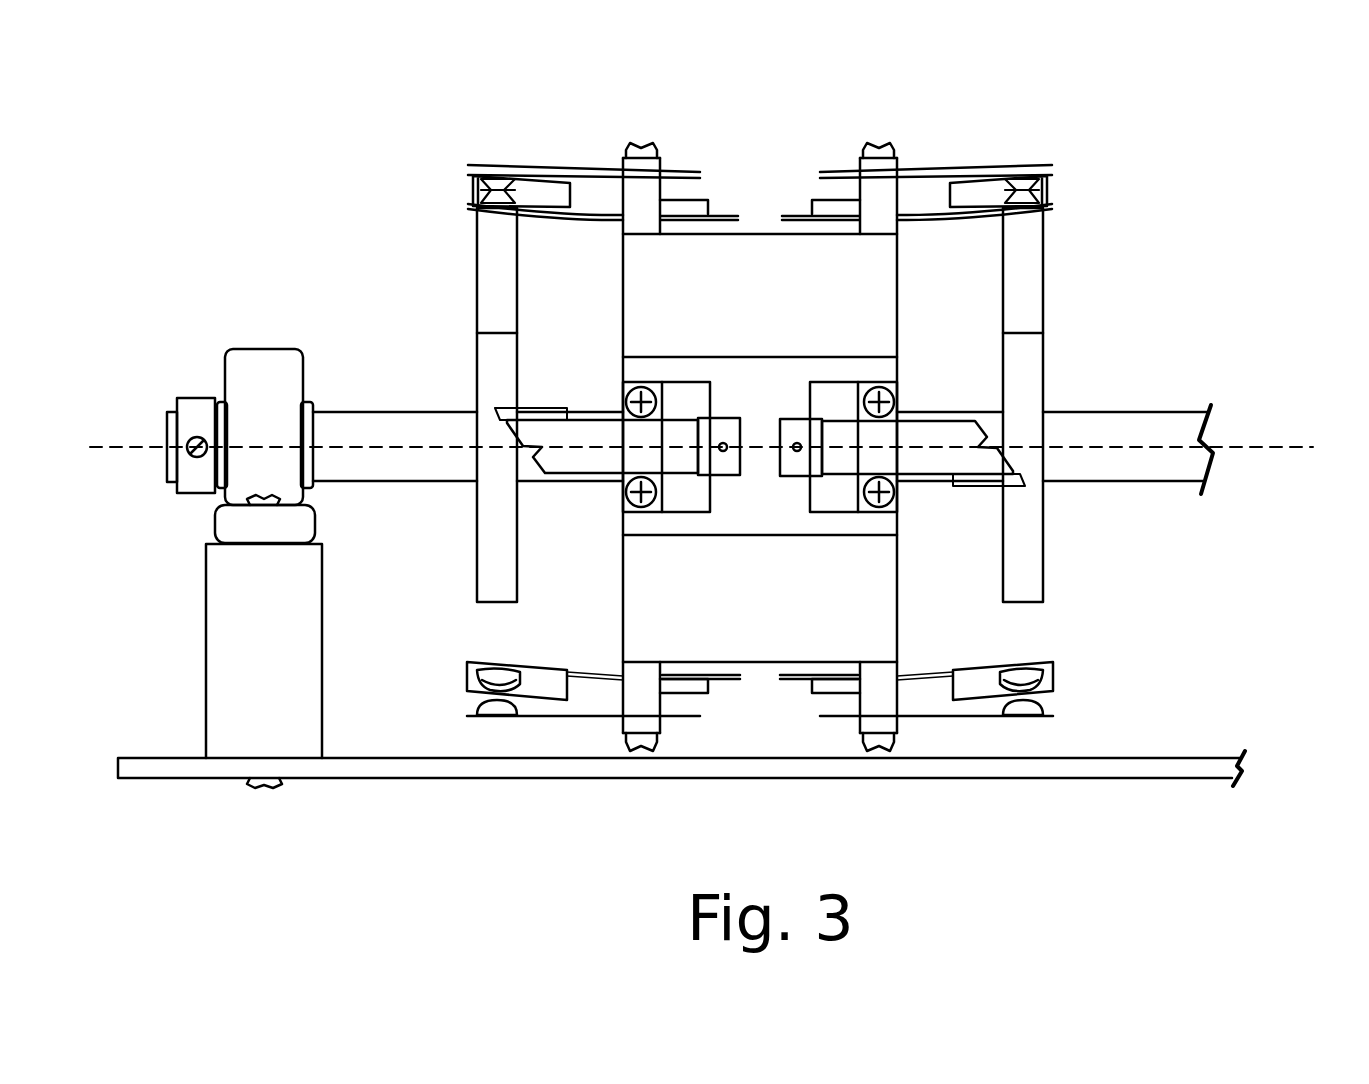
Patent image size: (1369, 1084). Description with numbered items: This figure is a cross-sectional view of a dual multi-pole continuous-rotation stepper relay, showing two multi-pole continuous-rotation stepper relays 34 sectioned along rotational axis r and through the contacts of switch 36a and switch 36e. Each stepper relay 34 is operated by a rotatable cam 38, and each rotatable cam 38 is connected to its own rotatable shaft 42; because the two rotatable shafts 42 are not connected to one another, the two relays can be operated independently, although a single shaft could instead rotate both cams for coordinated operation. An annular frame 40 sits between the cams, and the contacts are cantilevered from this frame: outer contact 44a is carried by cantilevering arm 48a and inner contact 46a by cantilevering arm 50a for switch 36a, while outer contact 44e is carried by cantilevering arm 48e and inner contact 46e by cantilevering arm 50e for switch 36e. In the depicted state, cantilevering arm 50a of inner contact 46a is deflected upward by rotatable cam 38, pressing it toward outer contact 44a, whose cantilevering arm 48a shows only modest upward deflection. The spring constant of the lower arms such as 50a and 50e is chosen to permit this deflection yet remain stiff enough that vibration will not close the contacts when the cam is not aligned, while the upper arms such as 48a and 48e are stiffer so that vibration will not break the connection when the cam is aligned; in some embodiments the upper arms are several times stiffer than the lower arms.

The multi-pole continuous-rotation stepper relay 34 is at (777, 387).
The switch 36a is at (761, 190).
The switch 36e is at (782, 727).
The rotatable cam 38 is at (477, 300).
The annular frame 40 is at (782, 316).
The rotatable shaft 42 is at (387, 411).
The outer contact 44a is at (538, 181).
The outer contact 44e is at (477, 712).
The inner contact 46a is at (473, 193).
The inner contact 46e is at (467, 675).
The cantilevering arm 48a is at (603, 174).
The cantilevering arm 48e is at (585, 718).
The cantilevering arm 50a is at (600, 222).
The cantilevering arm 50e is at (582, 693).
The rotational axis r is at (1280, 442).